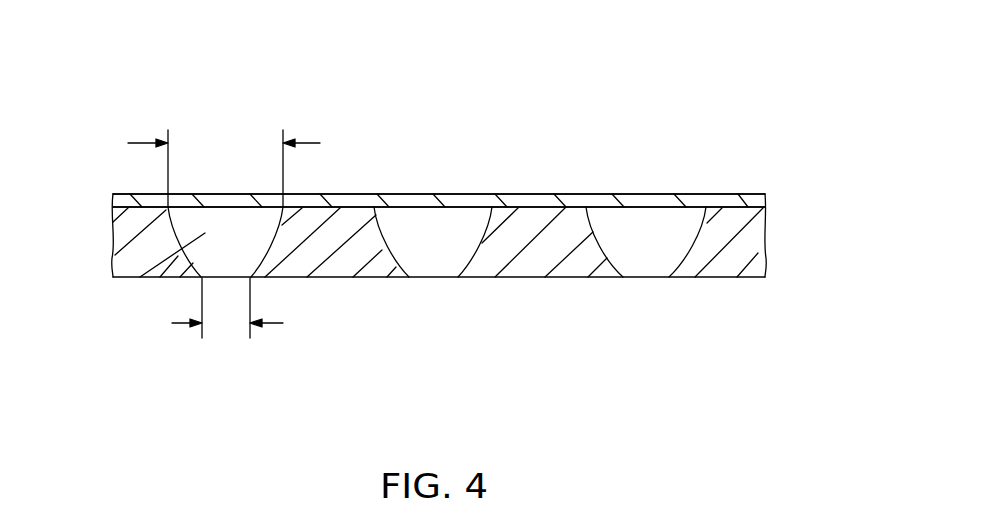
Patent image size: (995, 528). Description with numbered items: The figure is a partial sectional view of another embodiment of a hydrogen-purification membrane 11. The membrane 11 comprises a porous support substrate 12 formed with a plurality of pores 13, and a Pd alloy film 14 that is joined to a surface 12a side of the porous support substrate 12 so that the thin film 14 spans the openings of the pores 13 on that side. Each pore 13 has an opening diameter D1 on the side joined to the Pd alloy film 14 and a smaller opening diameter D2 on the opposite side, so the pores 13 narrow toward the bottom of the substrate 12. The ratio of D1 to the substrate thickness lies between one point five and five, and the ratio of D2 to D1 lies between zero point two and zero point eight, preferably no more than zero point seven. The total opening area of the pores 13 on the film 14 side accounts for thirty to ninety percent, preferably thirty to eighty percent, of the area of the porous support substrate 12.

The hydrogen-purification membrane 11 is at (480, 112).
The porous support substrate 12 is at (742, 245).
The surface 12a is at (728, 207).
The pores 13 is at (178, 256).
The Pd alloy film 14 is at (592, 194).
The opening diameter of pore on the Pd alloy film side D1 is at (225, 152).
The opening diameter of pore on the opposite side D2 is at (228, 323).